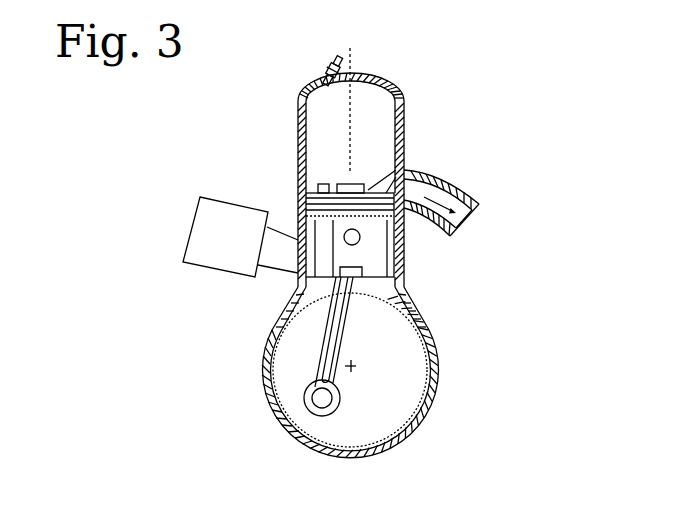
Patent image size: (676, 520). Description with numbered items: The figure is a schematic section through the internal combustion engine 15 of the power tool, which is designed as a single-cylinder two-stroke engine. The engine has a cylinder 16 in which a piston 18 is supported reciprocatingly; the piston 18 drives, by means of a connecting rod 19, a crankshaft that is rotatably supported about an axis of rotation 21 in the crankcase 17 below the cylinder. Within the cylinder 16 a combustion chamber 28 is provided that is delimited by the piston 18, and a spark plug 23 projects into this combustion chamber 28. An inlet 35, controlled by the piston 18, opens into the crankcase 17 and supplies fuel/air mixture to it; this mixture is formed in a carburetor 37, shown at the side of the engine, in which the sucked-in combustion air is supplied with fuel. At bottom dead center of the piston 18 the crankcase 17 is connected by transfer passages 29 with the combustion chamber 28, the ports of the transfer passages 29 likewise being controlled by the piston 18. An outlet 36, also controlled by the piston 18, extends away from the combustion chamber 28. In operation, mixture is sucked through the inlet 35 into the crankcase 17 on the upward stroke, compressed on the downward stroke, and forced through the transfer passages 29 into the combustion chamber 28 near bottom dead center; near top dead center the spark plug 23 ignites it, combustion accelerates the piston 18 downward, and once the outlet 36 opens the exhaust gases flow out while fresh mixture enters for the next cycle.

The internal combustion engine 15 is at (460, 141).
The cylinder 16 is at (405, 121).
The crankcase 17 is at (268, 409).
The piston 18 is at (382, 240).
The connecting rod 19 is at (324, 341).
The axis of rotation 21 is at (354, 364).
The spark plug 23 is at (326, 74).
The combustion chamber 28 is at (318, 122).
The transfer passages 29 is at (299, 181).
The inlet 35 is at (300, 258).
The outlet 36 is at (396, 189).
The carburetor 37 is at (224, 222).